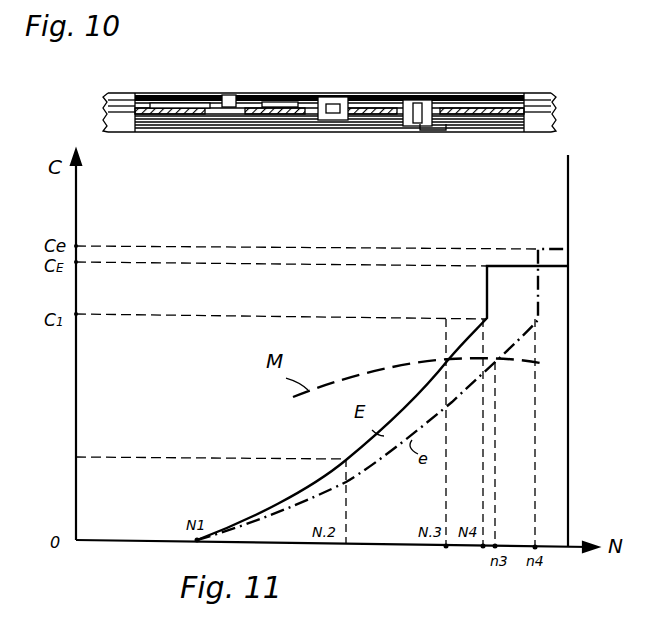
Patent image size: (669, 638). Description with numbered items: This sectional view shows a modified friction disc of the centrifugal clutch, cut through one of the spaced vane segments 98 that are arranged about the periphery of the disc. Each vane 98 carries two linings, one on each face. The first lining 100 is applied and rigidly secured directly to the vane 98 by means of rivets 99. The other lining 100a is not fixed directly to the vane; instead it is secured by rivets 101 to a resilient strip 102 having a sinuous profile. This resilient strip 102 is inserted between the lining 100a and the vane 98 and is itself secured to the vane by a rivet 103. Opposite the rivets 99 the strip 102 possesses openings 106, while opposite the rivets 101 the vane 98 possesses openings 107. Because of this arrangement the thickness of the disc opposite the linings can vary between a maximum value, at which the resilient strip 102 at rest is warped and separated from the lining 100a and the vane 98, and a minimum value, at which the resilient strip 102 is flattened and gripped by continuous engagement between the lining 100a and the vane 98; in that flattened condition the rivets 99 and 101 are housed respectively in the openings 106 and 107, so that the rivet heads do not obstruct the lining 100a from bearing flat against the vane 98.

The vane segment 98 is at (512, 94).
The rivet 99 is at (440, 130).
The lining 100 is at (276, 130).
The lining 100a is at (142, 94).
The rivet 101 is at (240, 95).
The resilient strip 102 is at (292, 100).
The rivet 103 is at (336, 104).
The opening 106 is at (410, 100).
The opening 107 is at (208, 130).